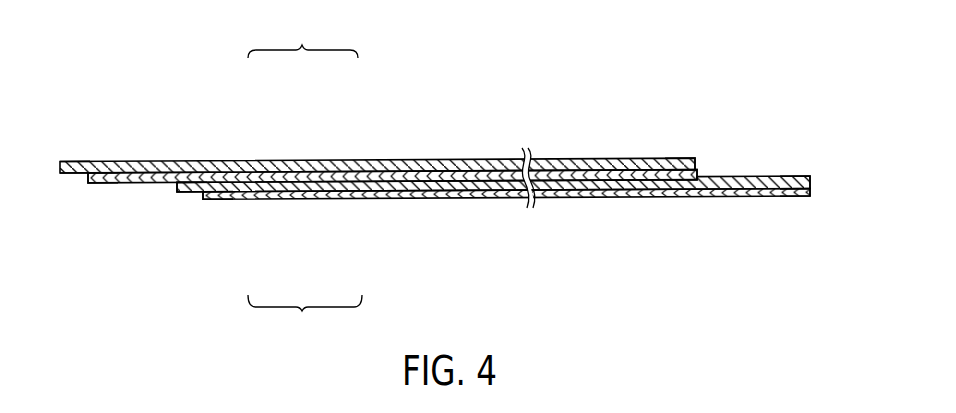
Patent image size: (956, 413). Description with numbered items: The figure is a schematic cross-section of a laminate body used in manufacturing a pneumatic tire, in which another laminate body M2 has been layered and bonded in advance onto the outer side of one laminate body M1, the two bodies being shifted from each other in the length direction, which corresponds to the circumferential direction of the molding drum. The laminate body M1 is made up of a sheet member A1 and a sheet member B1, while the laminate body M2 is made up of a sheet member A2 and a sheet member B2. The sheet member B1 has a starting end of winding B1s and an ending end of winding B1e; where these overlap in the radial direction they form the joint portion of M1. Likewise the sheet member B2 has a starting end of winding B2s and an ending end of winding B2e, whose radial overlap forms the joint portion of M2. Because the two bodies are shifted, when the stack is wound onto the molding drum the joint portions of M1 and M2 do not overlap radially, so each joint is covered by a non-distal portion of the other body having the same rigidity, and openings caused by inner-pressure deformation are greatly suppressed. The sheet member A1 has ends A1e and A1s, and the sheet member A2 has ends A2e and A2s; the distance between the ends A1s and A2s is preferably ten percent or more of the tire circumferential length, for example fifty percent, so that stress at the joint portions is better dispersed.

The sheet member B2 is at (262, 170).
The ending end of winding of sheet member B2 B2e is at (57, 166).
The starting end of winding of sheet member B2 B2s is at (695, 172).
The sheet member A2 is at (354, 176).
The end of sheet member A2 A2e is at (88, 183).
The end of sheet member A2 A2s is at (697, 177).
The sheet member B1 is at (256, 195).
The ending end of winding of sheet member B1 B1e is at (177, 190).
The starting end of winding of sheet member B1 B1s is at (811, 180).
The sheet member A1 is at (345, 197).
The end of sheet member A1 A1e is at (203, 197).
The end of sheet member A1 A1s is at (811, 194).
The laminate body M2 is at (303, 35).
The laminate body M1 is at (305, 319).